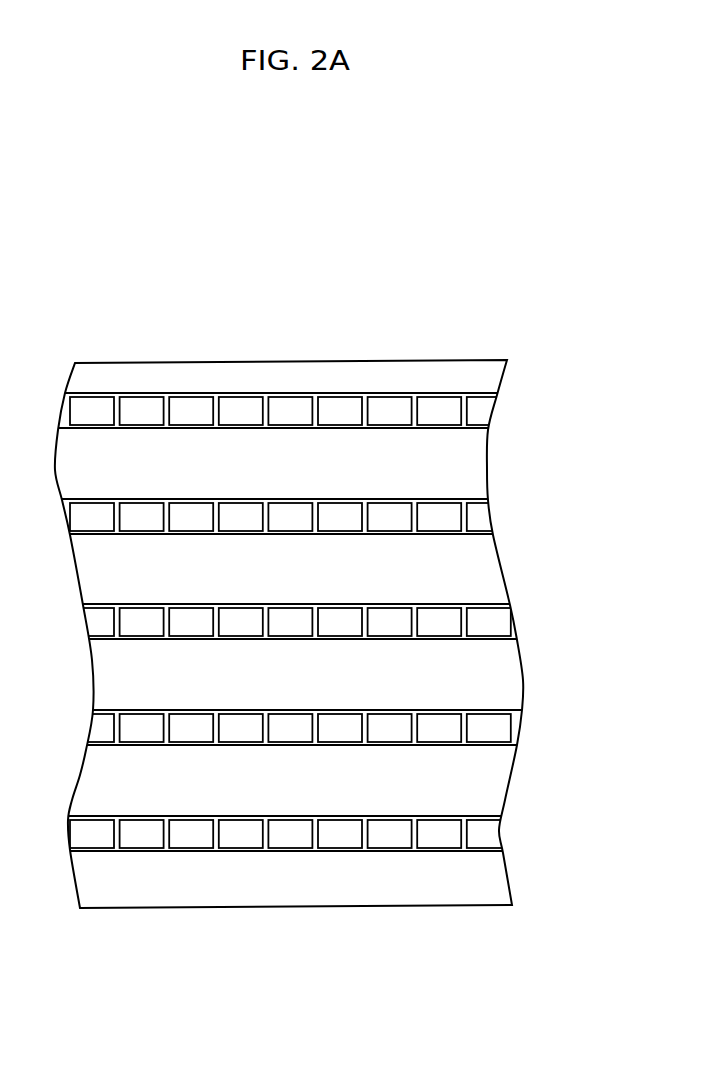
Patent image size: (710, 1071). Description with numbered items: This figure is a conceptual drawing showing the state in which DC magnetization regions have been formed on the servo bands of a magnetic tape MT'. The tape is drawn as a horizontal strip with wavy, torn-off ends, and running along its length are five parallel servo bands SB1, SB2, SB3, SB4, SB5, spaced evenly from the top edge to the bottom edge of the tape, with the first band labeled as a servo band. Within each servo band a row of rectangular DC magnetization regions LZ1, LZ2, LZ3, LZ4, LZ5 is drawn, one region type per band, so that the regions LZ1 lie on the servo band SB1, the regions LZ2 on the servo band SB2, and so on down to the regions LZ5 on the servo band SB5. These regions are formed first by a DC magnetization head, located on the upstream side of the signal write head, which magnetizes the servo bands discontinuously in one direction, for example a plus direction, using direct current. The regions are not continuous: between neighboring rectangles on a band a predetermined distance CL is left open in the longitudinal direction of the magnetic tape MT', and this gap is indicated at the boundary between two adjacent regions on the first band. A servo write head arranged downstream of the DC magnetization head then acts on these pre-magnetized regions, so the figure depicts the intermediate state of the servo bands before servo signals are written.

The magnetic tape MT' is at (289, 595).
The predetermined distance CL is at (167, 403).
The servo band SB1 is at (347, 372).
The servo band SB2 is at (315, 494).
The servo band SB3 is at (315, 598).
The servo band SB4 is at (315, 705).
The servo band SB5 is at (315, 812).
The DC magnetization region LZ1 is at (140, 405).
The DC magnetization region LZ2 is at (141, 507).
The DC magnetization region LZ3 is at (141, 613).
The DC magnetization region LZ4 is at (143, 720).
The DC magnetization region LZ5 is at (143, 826).